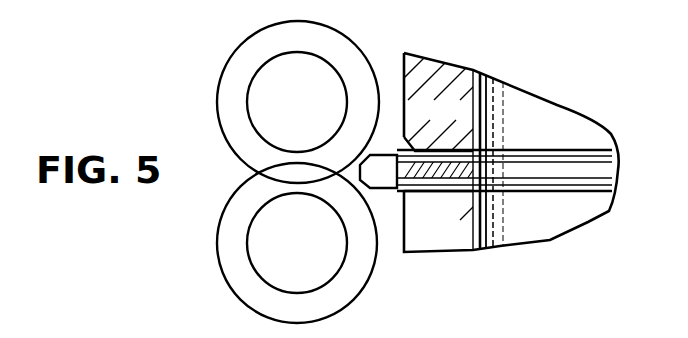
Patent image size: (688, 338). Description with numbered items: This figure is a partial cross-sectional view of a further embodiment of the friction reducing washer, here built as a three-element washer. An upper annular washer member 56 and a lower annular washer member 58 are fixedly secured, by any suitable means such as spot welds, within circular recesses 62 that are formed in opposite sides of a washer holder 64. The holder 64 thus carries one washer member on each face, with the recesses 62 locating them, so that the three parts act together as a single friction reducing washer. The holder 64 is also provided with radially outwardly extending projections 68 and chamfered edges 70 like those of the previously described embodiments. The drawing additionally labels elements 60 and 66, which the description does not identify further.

The upper annular washer member 56 is at (501, 130).
The lower annular washer member 58 is at (509, 140).
The pin 60 is at (592, 171).
The circular recess 62 is at (500, 161).
The washer holder 64 is at (404, 198).
The upper block portion 66 is at (403, 152).
The radially outwardly extending projection 68 is at (365, 160).
The chamfered edge 70 is at (364, 188).